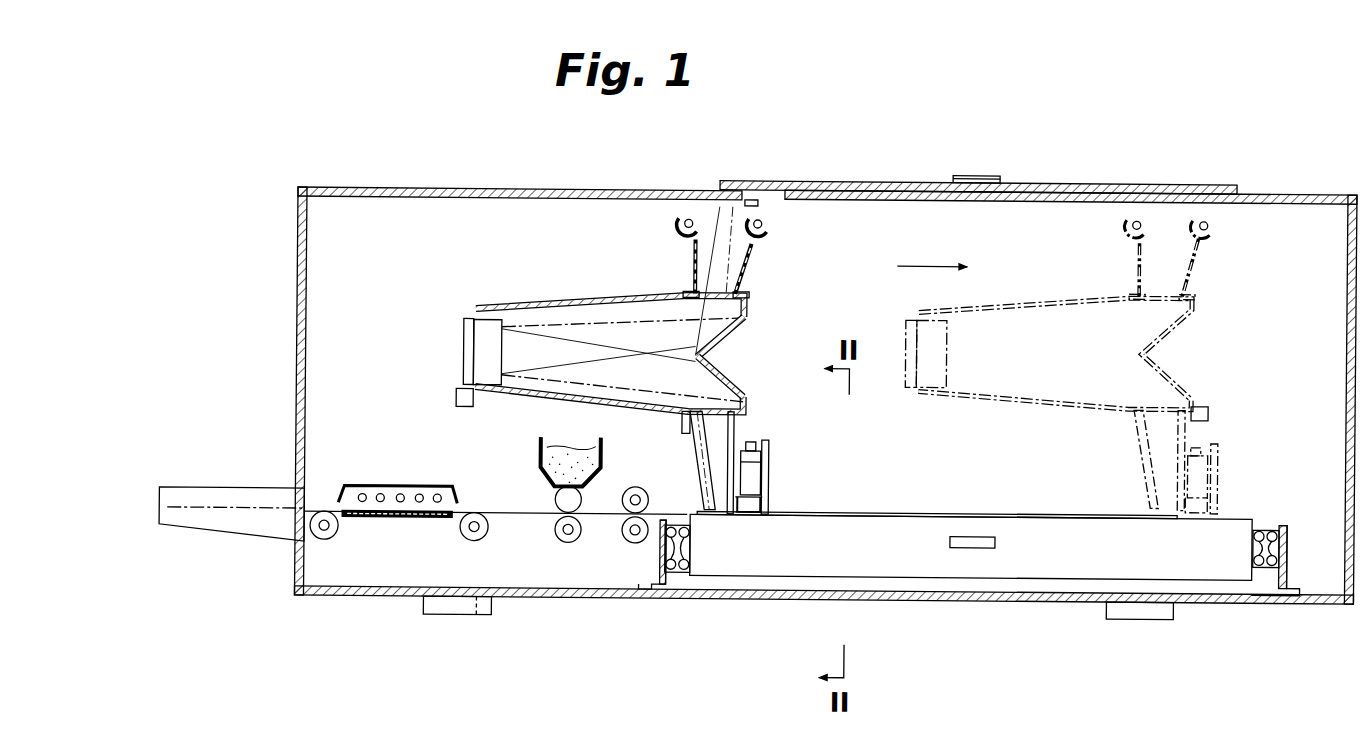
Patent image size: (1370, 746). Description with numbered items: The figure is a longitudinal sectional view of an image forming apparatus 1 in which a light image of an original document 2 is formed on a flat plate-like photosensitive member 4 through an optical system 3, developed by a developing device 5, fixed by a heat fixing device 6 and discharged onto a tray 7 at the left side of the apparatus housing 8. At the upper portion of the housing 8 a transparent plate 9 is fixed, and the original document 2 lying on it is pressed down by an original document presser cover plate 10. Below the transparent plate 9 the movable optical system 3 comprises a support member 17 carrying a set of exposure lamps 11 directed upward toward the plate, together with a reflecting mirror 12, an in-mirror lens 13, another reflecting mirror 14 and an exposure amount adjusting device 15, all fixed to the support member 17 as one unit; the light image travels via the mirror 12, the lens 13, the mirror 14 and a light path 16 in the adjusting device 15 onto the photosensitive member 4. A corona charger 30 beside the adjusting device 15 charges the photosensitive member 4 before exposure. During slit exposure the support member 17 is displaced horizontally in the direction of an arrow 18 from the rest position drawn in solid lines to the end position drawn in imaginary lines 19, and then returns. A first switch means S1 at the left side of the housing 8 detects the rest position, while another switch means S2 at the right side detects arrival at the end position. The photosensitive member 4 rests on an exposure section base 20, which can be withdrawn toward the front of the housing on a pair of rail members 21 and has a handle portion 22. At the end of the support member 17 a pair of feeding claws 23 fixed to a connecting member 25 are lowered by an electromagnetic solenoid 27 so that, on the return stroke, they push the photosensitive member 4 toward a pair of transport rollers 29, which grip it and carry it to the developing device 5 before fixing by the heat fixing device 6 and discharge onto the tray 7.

The image forming apparatus 1 is at (927, 126).
The original document 2 is at (815, 185).
The optical system 3 is at (557, 282).
The photosensitive member 4 is at (905, 510).
The developing device 5 is at (541, 456).
The heat fixing device 6 is at (403, 485).
The tray 7 is at (205, 497).
The apparatus housing 8 is at (1355, 188).
The transparent plate 9 is at (1108, 177).
The original document presser cover plate 10 is at (875, 177).
The exposure lamps 11 is at (682, 231).
The reflecting mirror 12 is at (727, 327).
The in-mirror lens 13 is at (480, 333).
The reflecting mirror 14 is at (725, 365).
The exposure amount adjusting device 15 is at (708, 478).
The light path 16 is at (722, 413).
The support member 17 is at (690, 416).
The arrow 18 is at (920, 260).
The imaginary lines 19 is at (1178, 326).
The exposure section base 20 is at (1035, 527).
The rail members 21 is at (683, 572).
The handle portion 22 is at (975, 544).
The feeding claws 23 is at (772, 497).
The connecting member 25 is at (760, 442).
The electromagnetic solenoid 27 is at (765, 468).
The transport rollers 29 is at (631, 505).
The corona charger 30 is at (750, 506).
The first switch means S1 is at (458, 396).
The switch means S2 is at (1212, 407).